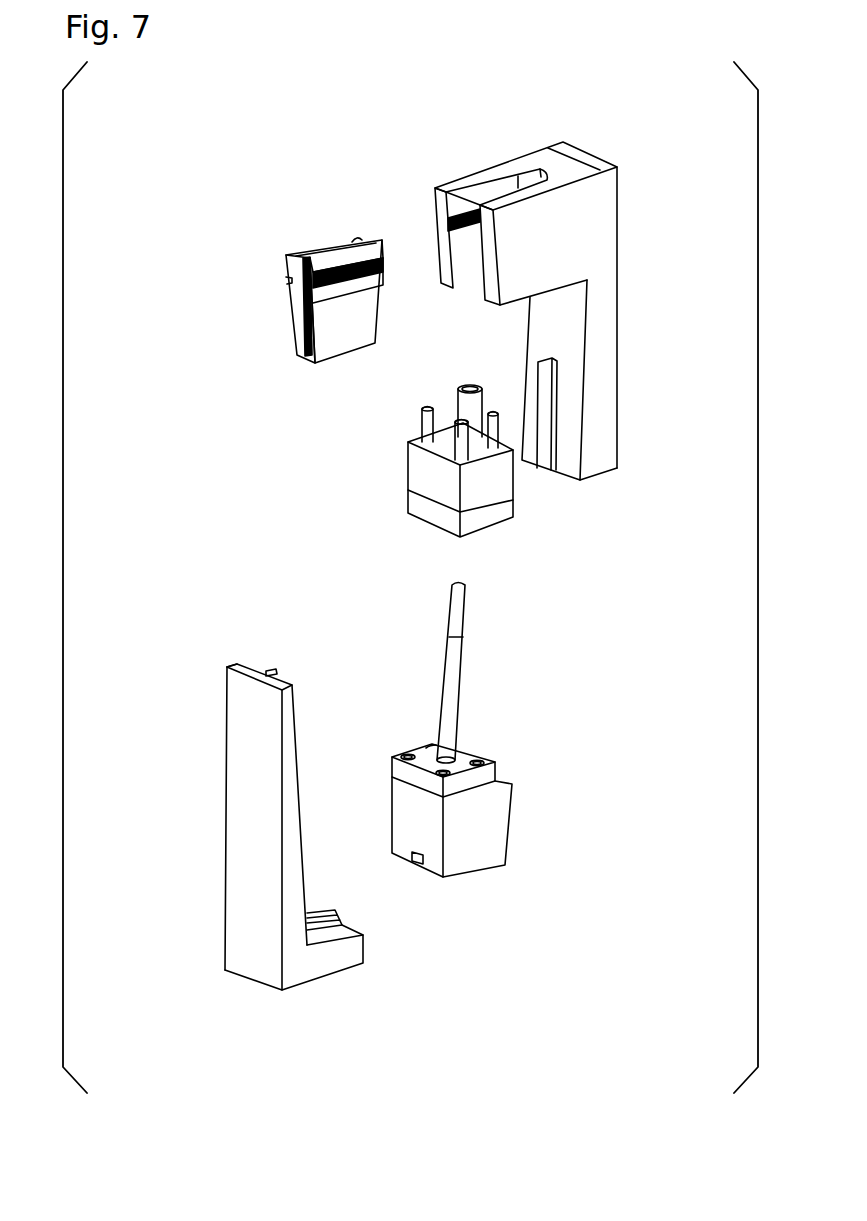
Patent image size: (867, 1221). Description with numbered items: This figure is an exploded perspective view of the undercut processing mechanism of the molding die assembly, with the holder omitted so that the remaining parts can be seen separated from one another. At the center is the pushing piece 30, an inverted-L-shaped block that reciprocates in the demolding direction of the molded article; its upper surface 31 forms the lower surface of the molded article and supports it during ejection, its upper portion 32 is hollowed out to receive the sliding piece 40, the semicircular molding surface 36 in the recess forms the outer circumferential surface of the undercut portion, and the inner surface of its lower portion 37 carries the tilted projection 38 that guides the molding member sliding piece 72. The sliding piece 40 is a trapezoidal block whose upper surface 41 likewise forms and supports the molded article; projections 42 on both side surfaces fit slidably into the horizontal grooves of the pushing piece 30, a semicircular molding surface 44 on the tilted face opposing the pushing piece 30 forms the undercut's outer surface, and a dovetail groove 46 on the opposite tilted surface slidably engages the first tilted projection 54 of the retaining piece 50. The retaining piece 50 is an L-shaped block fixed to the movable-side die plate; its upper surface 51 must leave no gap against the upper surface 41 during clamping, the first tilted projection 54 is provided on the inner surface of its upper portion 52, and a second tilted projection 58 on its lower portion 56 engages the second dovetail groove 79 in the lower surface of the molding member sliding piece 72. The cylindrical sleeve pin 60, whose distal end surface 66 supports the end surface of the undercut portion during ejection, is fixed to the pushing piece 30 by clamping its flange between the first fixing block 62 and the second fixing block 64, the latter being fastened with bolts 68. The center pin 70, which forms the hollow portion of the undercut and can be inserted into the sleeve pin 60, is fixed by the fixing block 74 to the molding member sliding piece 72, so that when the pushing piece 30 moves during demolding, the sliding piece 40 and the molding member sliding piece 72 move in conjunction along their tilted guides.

The pushing piece 30 is at (567, 314).
The upper surface of the pushing piece 31 is at (590, 163).
The upper portion of the pushing piece 32 is at (630, 145).
The molding surface 36 is at (530, 172).
The lower portion of the pushing piece 37 is at (630, 288).
The tilted projection 38 is at (545, 470).
The sliding piece 40 is at (295, 268).
The upper surface of the sliding piece 41 is at (315, 262).
The projections 42 is at (333, 298).
The molding surface 44 is at (357, 240).
The dovetail groove 46 is at (300, 352).
The retaining piece 50 is at (287, 823).
The upper surface of the retaining piece 51 is at (233, 668).
The upper portion of the retaining piece 52 is at (208, 667).
The first tilted projection 54 is at (270, 672).
The lower portion of the retaining piece 56 is at (380, 998).
The second tilted projection 58 is at (340, 912).
The sleeve pin 60 is at (410, 402).
The first fixing block 62 is at (433, 473).
The second fixing block 64 is at (433, 512).
The distal end surface 66 is at (465, 392).
The bolts 68 is at (427, 435).
The center pin 70 is at (452, 620).
The molding member sliding piece 72 is at (496, 810).
The fixing block 74 is at (490, 777).
The second dovetail groove 79 is at (423, 857).